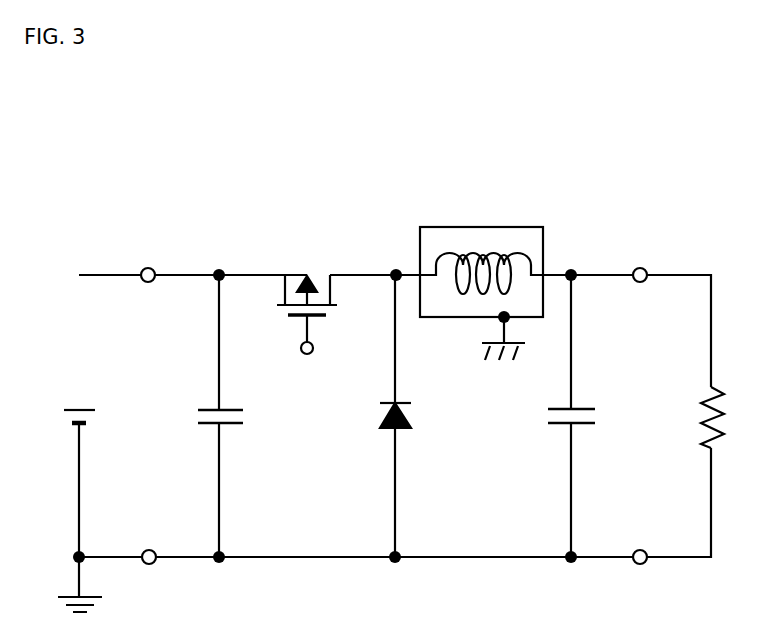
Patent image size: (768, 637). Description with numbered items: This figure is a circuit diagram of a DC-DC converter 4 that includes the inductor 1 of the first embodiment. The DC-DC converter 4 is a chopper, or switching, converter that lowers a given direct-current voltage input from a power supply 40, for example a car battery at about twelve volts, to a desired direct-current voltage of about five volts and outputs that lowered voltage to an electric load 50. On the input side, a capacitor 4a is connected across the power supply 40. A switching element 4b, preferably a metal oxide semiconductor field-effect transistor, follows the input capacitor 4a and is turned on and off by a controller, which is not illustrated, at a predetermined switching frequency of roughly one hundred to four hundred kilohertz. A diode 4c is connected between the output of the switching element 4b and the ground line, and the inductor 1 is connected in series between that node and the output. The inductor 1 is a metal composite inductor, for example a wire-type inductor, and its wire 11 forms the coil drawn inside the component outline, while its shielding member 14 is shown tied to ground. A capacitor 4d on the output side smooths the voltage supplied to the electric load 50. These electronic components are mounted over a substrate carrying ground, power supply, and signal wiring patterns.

The DC-DC converter 4 is at (410, 112).
The power supply 40 is at (70, 408).
The capacitor on the input side 4a is at (208, 408).
The switching element 4b is at (303, 276).
The diode 4c is at (383, 402).
The capacitor on the output side 4d is at (584, 409).
The inductor 1 is at (501, 245).
The wire 11 is at (453, 255).
The shielding member 14 is at (543, 248).
The electric load 50 is at (713, 387).